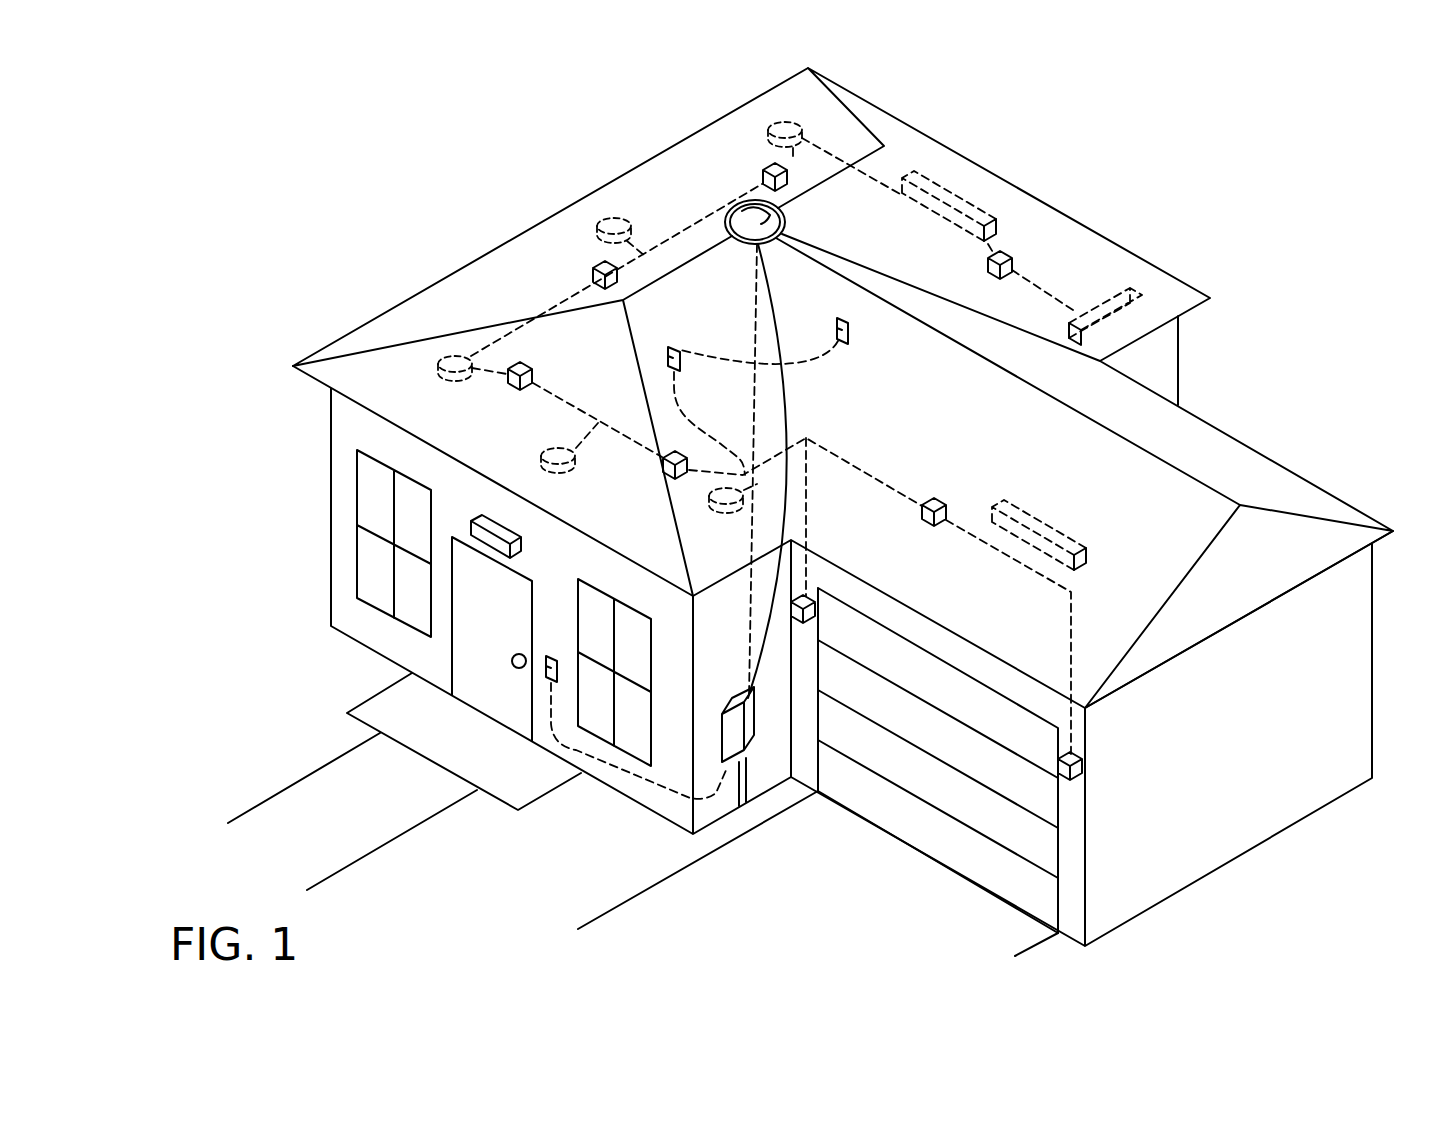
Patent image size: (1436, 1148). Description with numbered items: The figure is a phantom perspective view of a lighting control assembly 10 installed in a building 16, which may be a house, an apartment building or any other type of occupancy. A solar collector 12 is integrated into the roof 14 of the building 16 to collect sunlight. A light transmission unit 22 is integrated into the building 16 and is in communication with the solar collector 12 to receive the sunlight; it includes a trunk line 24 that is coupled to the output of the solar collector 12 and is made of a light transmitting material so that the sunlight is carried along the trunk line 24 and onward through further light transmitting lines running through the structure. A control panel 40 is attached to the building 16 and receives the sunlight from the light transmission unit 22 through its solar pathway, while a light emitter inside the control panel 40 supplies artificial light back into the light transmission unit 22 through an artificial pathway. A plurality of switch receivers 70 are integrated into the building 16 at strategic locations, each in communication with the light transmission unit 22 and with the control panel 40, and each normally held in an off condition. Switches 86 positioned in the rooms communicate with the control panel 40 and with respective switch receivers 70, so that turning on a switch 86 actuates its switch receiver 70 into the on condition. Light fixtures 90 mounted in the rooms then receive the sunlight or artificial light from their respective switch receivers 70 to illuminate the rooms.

The lighting control assembly 10 is at (299, 170).
The solar collector 12 is at (783, 216).
The roof 14 is at (527, 264).
The building 16 is at (272, 334).
The light transmission unit 22 is at (731, 210).
The trunk line 24 is at (826, 690).
The control panel 40 is at (745, 733).
The switch receivers 70 is at (771, 165).
The switches 86 is at (836, 330).
The light fixtures 90 is at (786, 124).